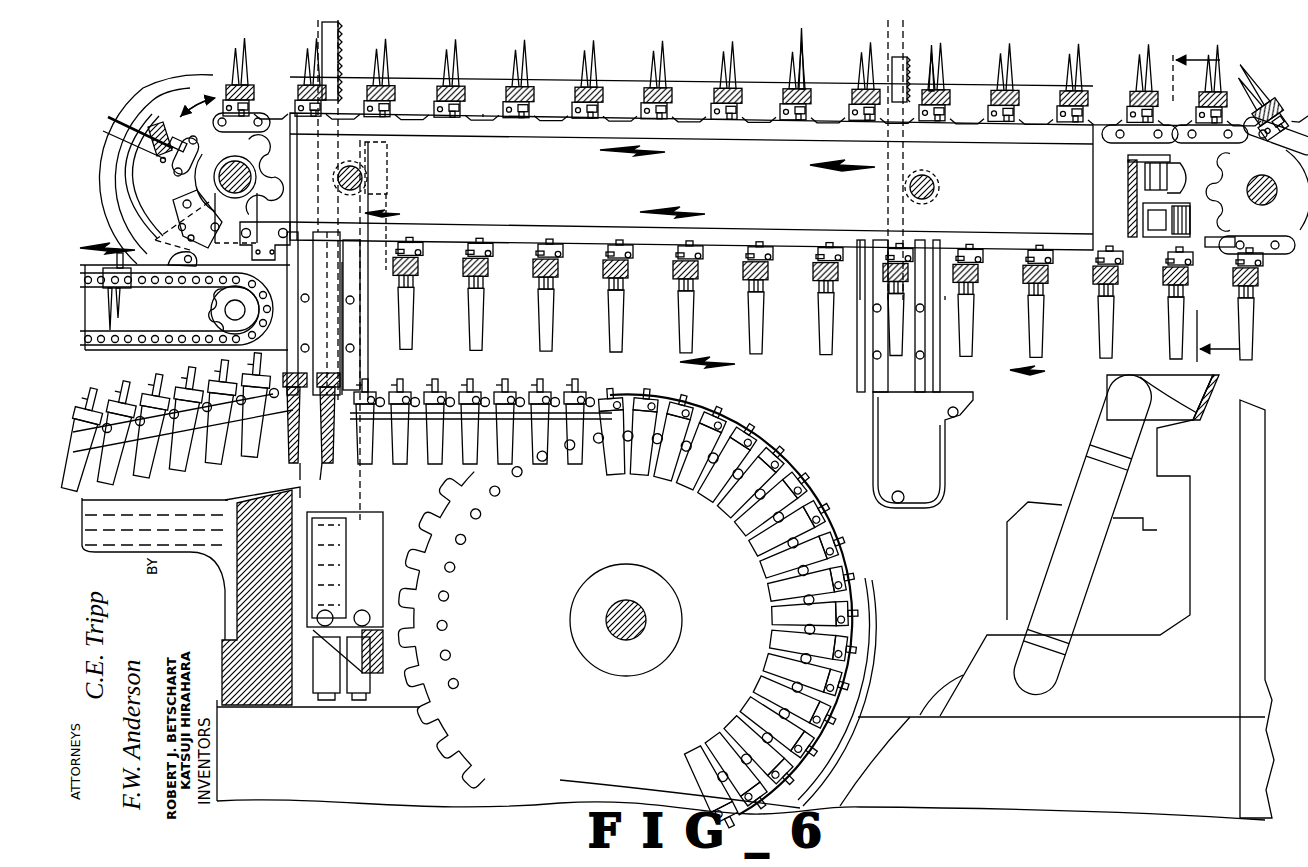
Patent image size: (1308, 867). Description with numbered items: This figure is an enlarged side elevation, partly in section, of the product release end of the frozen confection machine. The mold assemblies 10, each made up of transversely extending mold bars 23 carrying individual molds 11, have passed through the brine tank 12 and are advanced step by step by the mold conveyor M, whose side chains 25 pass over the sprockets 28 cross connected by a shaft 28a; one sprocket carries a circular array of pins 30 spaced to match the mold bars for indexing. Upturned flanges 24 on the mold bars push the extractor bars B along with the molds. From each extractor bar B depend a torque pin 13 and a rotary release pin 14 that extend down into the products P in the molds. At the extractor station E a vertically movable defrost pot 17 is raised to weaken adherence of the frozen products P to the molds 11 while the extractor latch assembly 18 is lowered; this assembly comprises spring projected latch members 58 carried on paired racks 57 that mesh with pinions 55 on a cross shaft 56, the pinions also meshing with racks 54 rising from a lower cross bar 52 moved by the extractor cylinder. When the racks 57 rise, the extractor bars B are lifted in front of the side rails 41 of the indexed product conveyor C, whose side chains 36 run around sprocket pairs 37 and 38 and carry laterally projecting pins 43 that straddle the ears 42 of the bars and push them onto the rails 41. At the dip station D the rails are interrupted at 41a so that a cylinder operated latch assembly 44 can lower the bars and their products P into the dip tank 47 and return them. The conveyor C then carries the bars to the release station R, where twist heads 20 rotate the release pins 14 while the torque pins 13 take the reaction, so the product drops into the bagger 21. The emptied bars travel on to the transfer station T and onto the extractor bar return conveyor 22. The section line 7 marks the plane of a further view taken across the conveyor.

The mold assemblies 10 is at (672, 470).
The mold 11 is at (318, 478).
The brine tank 12 is at (250, 707).
The torque pin 13 is at (937, 74).
The rotary release pin 14 is at (793, 80).
The defrost pot 17 is at (347, 547).
The extractor latch assembly 18 is at (323, 228).
The twist heads 20 is at (1203, 244).
The bagger 21 is at (1040, 548).
The extractor bar return conveyor 22 is at (202, 350).
The mold bars 23 is at (611, 390).
The upturned flanges 24 is at (527, 392).
The side conveyor chains 25 is at (684, 391).
The sprockets 28 is at (527, 655).
The shaft 28a is at (648, 623).
The pins 30 is at (518, 479).
The side chains 36 is at (118, 139).
The sprocket pair 37 is at (251, 154).
The sprocket pair 38 is at (1272, 171).
The side rails 41 is at (517, 292).
The interruption in rails 41a is at (905, 300).
The ears 42 is at (398, 250).
The pins 43 is at (345, 262).
The cylinder operated latch assembly 44 is at (948, 298).
The dip tank 47 is at (873, 466).
The lower cross bar 52 is at (385, 697).
The racks 54 is at (390, 193).
The pinions 55 is at (387, 152).
The cross shaft 56 is at (363, 178).
The paired racks 57 is at (340, 37).
The spring projected latch member 58 is at (343, 262).
The extractor bar B is at (449, 84).
The product conveyor C is at (484, 112).
The dip station D is at (932, 480).
The extractor station E is at (286, 88).
The mold conveyor M is at (734, 410).
The frozen products P is at (820, 337).
The release station R is at (1120, 184).
The transfer station T is at (128, 189).
The section line 7 is at (1206, 208).